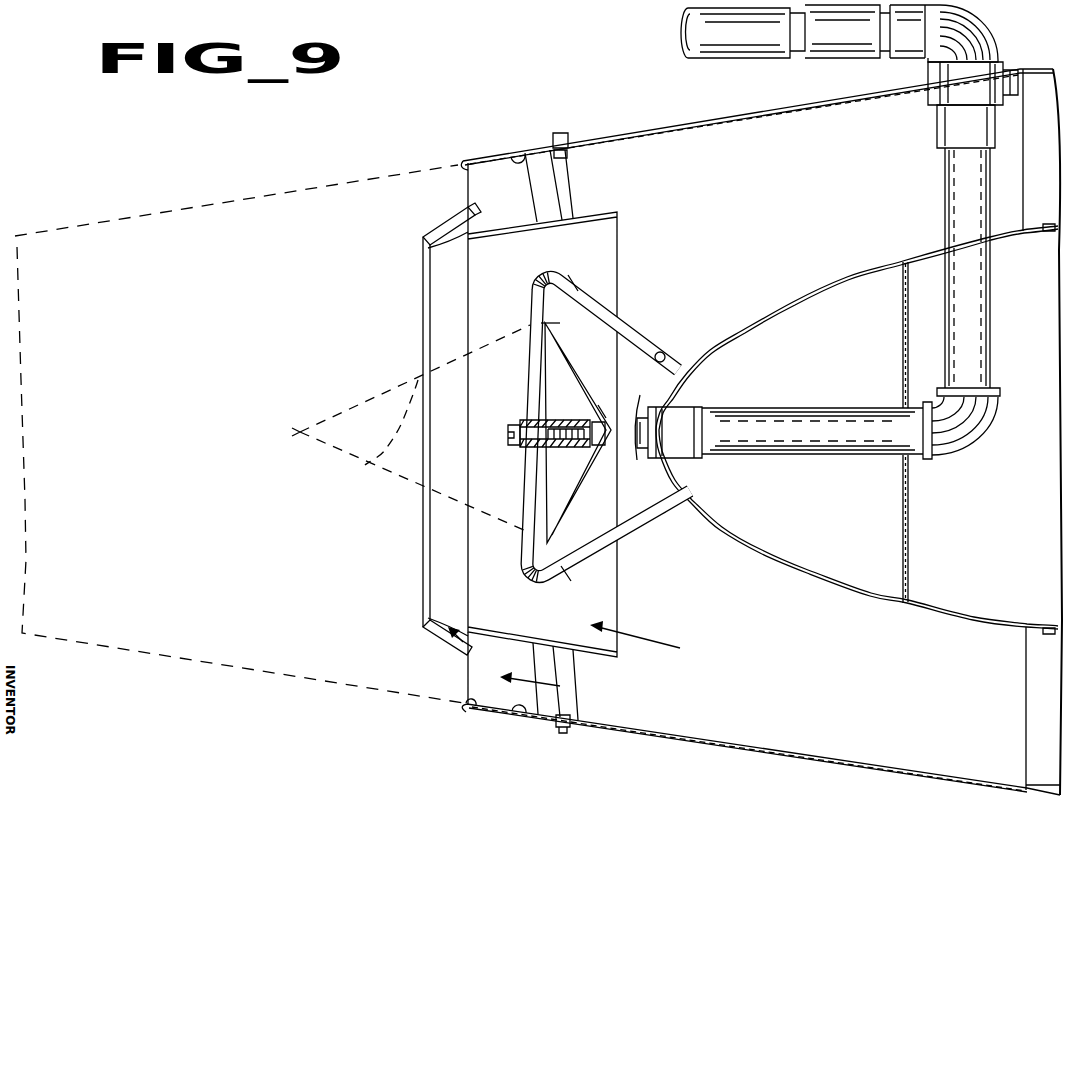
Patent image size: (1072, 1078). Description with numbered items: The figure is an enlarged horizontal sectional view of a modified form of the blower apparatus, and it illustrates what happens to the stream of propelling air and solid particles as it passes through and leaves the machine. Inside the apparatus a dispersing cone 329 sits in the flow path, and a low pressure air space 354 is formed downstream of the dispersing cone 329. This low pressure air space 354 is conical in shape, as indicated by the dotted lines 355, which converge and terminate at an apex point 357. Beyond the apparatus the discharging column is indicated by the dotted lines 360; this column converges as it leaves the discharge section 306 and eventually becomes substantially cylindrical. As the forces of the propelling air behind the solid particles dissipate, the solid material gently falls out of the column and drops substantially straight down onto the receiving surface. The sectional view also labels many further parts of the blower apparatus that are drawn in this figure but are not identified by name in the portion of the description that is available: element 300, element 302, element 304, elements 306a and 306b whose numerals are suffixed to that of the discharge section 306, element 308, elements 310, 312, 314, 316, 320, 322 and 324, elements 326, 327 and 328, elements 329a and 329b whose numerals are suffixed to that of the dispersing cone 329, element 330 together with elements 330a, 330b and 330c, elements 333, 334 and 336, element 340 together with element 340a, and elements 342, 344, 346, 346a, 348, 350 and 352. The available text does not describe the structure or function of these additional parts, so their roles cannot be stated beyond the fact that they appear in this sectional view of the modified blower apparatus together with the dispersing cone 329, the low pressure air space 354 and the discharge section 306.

The mounting assembly 300 is at (668, 128).
The housing side wall 302 is at (885, 154).
The housing corner 304 is at (467, 177).
The discharge section 306 is at (655, 128).
The plate tab 306a is at (467, 160).
The plate bolt 306b is at (527, 152).
The curved housing wall 308 is at (792, 300).
The flexible hose 310 is at (690, 37).
The hose elbow 312 is at (972, 36).
The coupling 314 is at (937, 78).
The vertical pipe 316 is at (960, 188).
The pipe elbow 320 is at (958, 453).
The horizontal pipe 322 is at (772, 412).
The pipe fitting 324 is at (668, 405).
The lower strut bracket 326 is at (676, 478).
The upper strut bracket 327 is at (628, 455).
The nut 328 is at (598, 442).
The dispersing cone 329 is at (578, 380).
The rib edge 329a is at (614, 420).
The rib top 329b is at (549, 323).
The tubular frame 330 is at (607, 318).
The frame bend outer portion 330a is at (553, 272).
The frame bend inner portion 330b is at (528, 337).
The frame strut 330c is at (572, 289).
The bolt housing 333 is at (531, 447).
The bolt head 334 is at (524, 430).
The spring 336 is at (546, 428).
The panel 340 is at (603, 213).
The panel flange 340a is at (430, 250).
The mounting bracket 342 is at (575, 165).
The panel face 344 is at (574, 243).
The edge strip 346 is at (440, 223).
The strip end 346a is at (470, 210).
The lip 348 is at (440, 244).
The opening 350 is at (440, 627).
The bracket flange 352 is at (492, 182).
The low pressure air space 354 is at (390, 422).
The dotted lines 355 is at (418, 378).
The apex point 357 is at (300, 432).
The dotted lines 360 is at (163, 204).